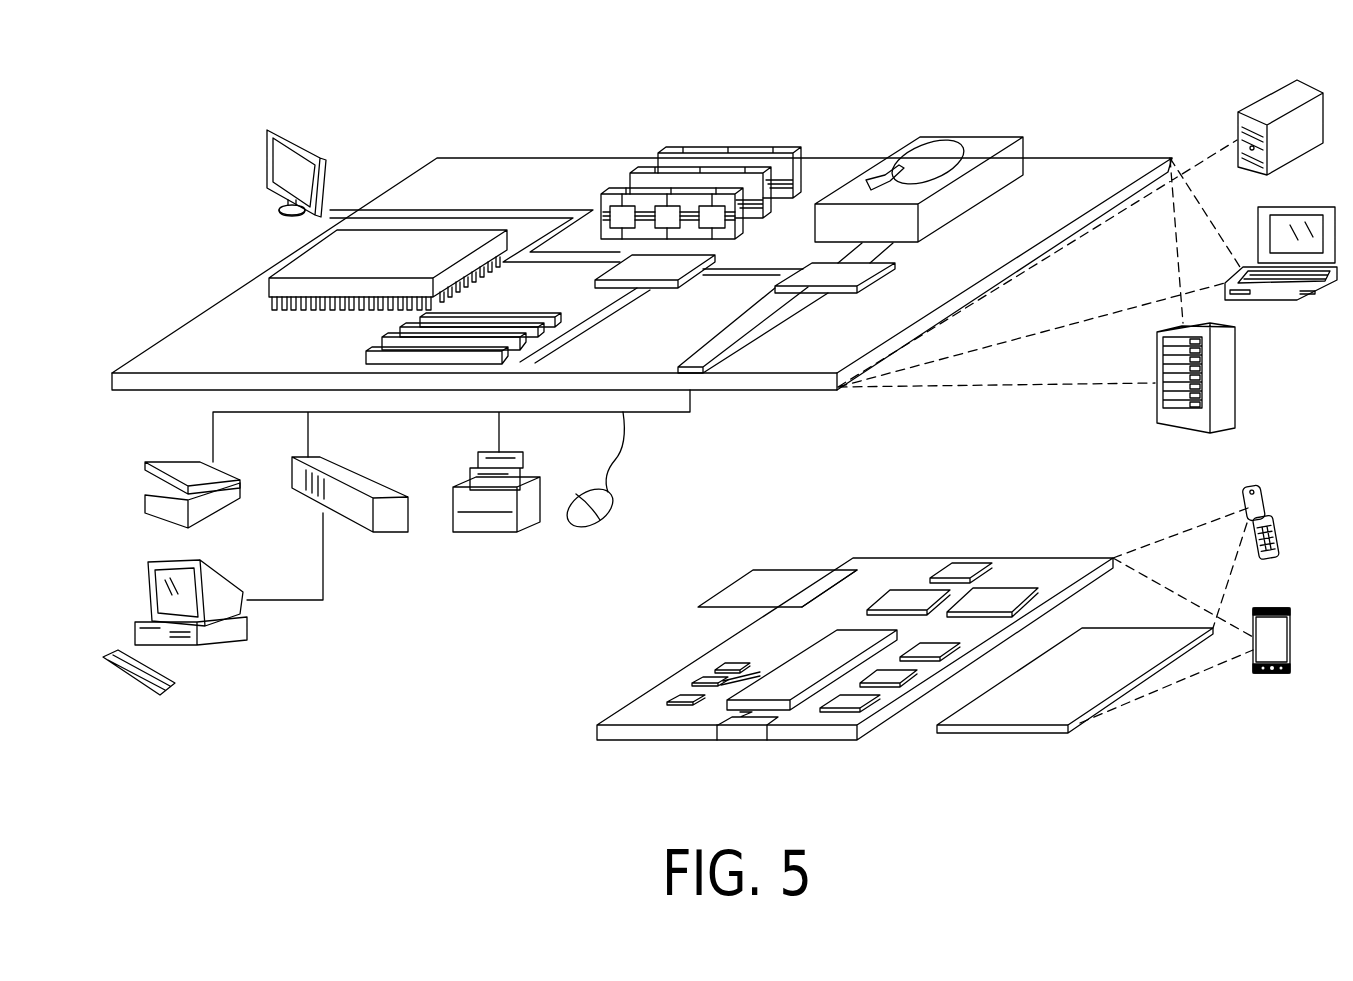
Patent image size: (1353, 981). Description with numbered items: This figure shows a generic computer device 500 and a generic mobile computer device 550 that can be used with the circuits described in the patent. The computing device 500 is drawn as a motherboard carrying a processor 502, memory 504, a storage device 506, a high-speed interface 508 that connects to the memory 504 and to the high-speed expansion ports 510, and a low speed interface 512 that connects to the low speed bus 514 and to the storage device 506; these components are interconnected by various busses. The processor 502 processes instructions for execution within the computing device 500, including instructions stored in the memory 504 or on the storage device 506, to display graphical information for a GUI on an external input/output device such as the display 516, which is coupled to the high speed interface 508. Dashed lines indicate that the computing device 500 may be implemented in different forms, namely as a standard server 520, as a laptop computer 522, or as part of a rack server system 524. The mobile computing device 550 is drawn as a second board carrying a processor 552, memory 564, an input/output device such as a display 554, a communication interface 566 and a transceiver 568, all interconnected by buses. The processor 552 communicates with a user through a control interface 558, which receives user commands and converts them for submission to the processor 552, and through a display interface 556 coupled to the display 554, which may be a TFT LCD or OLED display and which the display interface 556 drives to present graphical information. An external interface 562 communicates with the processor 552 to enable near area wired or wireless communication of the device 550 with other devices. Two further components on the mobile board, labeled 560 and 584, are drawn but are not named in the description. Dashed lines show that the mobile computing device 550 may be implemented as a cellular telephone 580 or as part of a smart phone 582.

The computing device 500 is at (397, 108).
The processor 502 is at (293, 262).
The memory 504 is at (732, 150).
The storage device 506 is at (958, 133).
The high-speed interface 508 is at (668, 262).
The high-speed expansion ports 510 is at (390, 337).
The low speed interface 512 is at (807, 270).
The low speed bus 514 is at (697, 367).
The display 516 is at (270, 127).
The standard server 520 is at (1260, 105).
The laptop computer 522 is at (1313, 203).
The rack server system 524 is at (1237, 377).
The mobile computer device 550 is at (1152, 733).
The processor 552 is at (780, 673).
The display 554 is at (1112, 647).
The display interface 556 is at (857, 700).
The control interface 558 is at (898, 676).
The input device controller 560 is at (935, 643).
The external interface 562 is at (742, 730).
The memory 564 is at (697, 680).
The communication interface 566 is at (910, 590).
The transceiver 568 is at (1000, 593).
The cellular telephone 580 is at (963, 567).
The smart phone 582 is at (838, 570).
The battery 584 is at (753, 570).